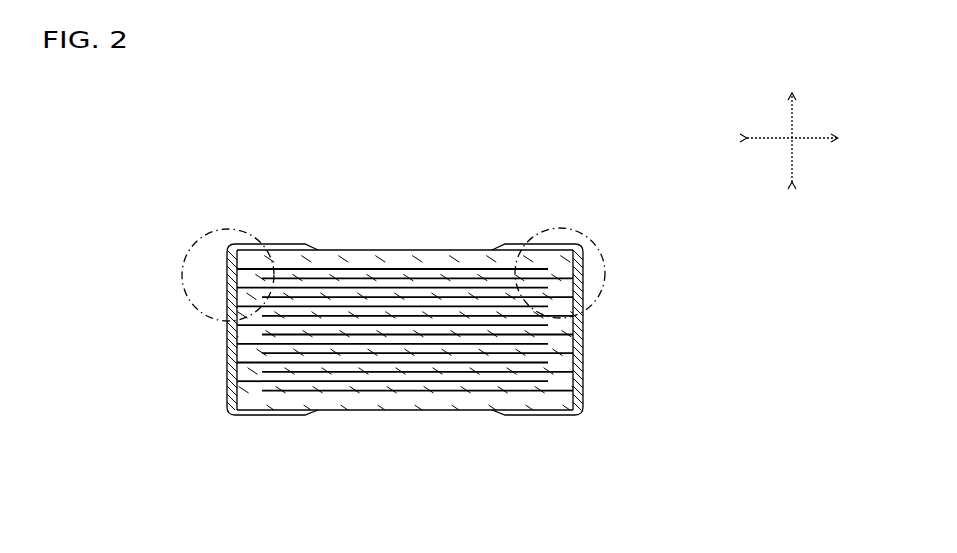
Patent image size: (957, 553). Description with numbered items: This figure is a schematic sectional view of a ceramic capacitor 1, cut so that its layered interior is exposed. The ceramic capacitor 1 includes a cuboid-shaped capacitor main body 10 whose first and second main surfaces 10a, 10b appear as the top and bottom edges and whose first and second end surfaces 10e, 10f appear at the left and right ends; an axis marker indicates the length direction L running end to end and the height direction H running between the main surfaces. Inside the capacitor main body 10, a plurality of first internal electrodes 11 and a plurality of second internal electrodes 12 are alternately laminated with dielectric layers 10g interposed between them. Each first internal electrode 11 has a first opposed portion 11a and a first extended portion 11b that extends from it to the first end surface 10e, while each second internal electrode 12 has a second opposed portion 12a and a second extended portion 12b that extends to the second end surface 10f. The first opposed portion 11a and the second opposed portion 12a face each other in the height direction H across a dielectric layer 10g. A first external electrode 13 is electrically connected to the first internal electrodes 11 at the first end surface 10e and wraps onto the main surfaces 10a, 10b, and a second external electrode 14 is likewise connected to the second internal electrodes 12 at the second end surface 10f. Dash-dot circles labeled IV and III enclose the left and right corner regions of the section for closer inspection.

The ceramic capacitor 1 is at (533, 204).
The capacitor main body 10 is at (456, 245).
The first main surface 10a is at (366, 249).
The second main surface 10b is at (360, 412).
The first end surface 10e is at (229, 399).
The second end surface 10f is at (582, 395).
The dielectric layer 10g is at (392, 377).
The first internal electrode 11 is at (343, 385).
The first opposed portion 11a is at (297, 384).
The first extended portion 11b is at (250, 384).
The second internal electrode 12 is at (427, 394).
The second opposed portion 12a is at (467, 394).
The second extended portion 12b is at (560, 394).
The first external electrode 13 is at (230, 380).
The second external electrode 14 is at (583, 381).
The detail region IV is at (238, 230).
The detail region III is at (580, 230).
The height direction H is at (792, 113).
The length direction L is at (815, 138).